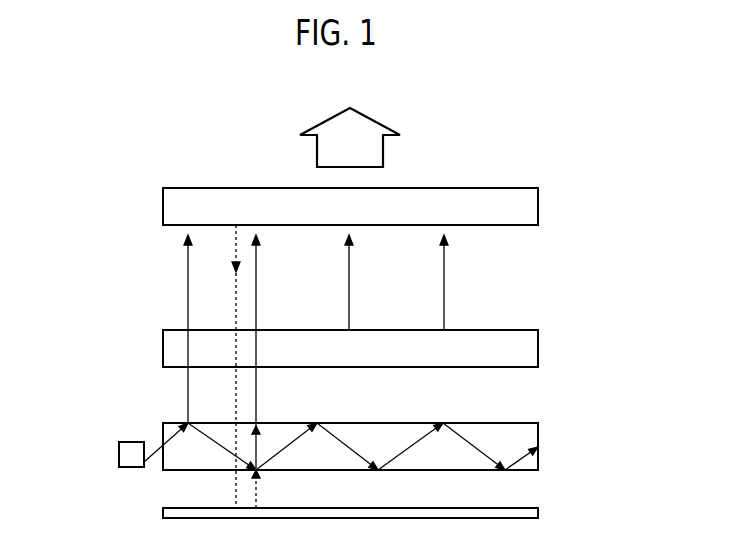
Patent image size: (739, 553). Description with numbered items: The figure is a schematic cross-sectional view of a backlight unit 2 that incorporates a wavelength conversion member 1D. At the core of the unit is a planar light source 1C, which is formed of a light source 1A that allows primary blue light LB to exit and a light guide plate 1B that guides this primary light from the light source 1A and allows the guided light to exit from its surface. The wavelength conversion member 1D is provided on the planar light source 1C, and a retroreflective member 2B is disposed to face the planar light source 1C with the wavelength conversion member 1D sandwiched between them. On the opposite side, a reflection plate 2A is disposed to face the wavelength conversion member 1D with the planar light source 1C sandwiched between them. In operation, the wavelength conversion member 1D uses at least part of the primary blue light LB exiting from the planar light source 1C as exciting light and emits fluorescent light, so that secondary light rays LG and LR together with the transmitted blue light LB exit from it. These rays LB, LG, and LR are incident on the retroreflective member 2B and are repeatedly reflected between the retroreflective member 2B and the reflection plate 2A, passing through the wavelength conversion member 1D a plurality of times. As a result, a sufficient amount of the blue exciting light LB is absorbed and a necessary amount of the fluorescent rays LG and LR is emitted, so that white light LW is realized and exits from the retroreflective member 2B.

The light source 1A is at (137, 442).
The light guide plate 1B is at (538, 440).
The planar light source 1C is at (72, 375).
The wavelength conversion member 1D is at (538, 348).
The backlight unit 2 is at (673, 188).
The reflection plate 2A is at (538, 512).
The retroreflective member 2B is at (538, 205).
The white light LW is at (383, 150).
The blue light LB is at (283, 242).
The green fluorescent light LG is at (351, 256).
The red fluorescent light LR is at (446, 256).